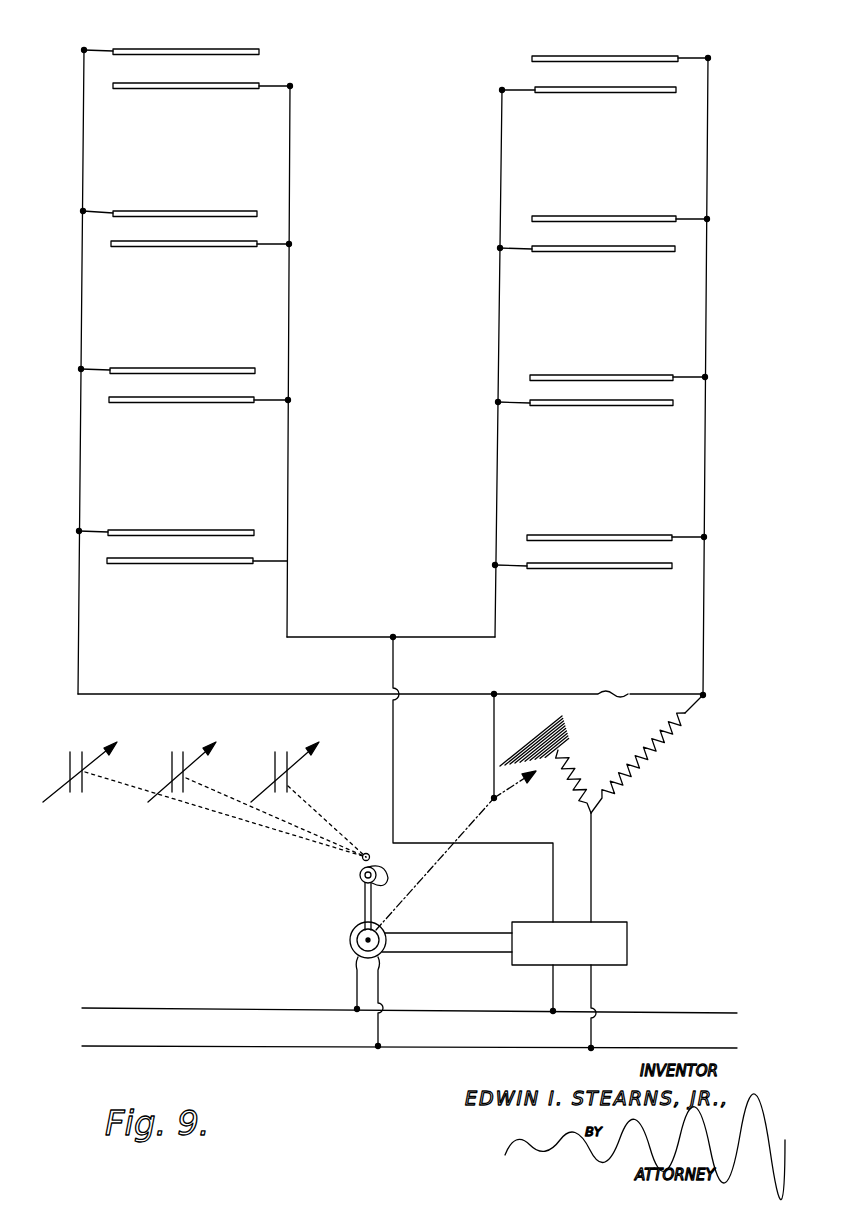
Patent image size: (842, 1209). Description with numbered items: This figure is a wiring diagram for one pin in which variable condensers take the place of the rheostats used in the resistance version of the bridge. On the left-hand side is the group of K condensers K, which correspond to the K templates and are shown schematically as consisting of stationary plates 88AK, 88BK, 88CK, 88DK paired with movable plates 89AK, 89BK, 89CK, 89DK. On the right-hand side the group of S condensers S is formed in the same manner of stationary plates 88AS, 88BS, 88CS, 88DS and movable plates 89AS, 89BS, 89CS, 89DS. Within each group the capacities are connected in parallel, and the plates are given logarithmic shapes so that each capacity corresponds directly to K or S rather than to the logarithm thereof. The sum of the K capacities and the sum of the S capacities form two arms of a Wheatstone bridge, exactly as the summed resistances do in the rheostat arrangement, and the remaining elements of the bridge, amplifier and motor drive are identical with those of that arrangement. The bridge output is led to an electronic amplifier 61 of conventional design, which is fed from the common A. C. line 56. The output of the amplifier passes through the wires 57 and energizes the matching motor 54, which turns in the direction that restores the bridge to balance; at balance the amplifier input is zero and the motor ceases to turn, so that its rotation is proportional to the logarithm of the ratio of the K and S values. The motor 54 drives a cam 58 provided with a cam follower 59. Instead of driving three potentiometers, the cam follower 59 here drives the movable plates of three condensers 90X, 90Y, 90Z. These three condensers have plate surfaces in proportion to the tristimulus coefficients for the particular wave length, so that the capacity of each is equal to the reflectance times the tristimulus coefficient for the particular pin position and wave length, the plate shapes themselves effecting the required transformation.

The K condensers K is at (62, 392).
The S condensers S is at (483, 407).
The stationary plate 88AK is at (176, 48).
The movable plate 89AK is at (188, 90).
The stationary plate 88BK is at (180, 210).
The movable plate 89BK is at (207, 248).
The stationary plate 88CK is at (167, 368).
The movable plate 89CK is at (210, 403).
The stationary plate 88DK is at (165, 530).
The movable plate 89DK is at (187, 564).
The stationary plate 88AS is at (614, 55).
The movable plate 89AS is at (615, 94).
The stationary plate 88BS is at (621, 201).
The movable plate 89BS is at (627, 253).
The stationary plate 88CS is at (592, 374).
The movable plate 89CS is at (626, 406).
The stationary plate 88DS is at (585, 535).
The movable plate 89DS is at (620, 569).
The condenser 90X is at (92, 785).
The condenser 90Y is at (193, 787).
The condenser 90Z is at (292, 790).
The cam follower 59 is at (369, 852).
The cam 58 is at (382, 883).
The matching motor 54 is at (350, 944).
The wires 57 is at (447, 926).
The electronic amplifier 61 is at (627, 922).
The A. C. line 56 is at (409, 1028).